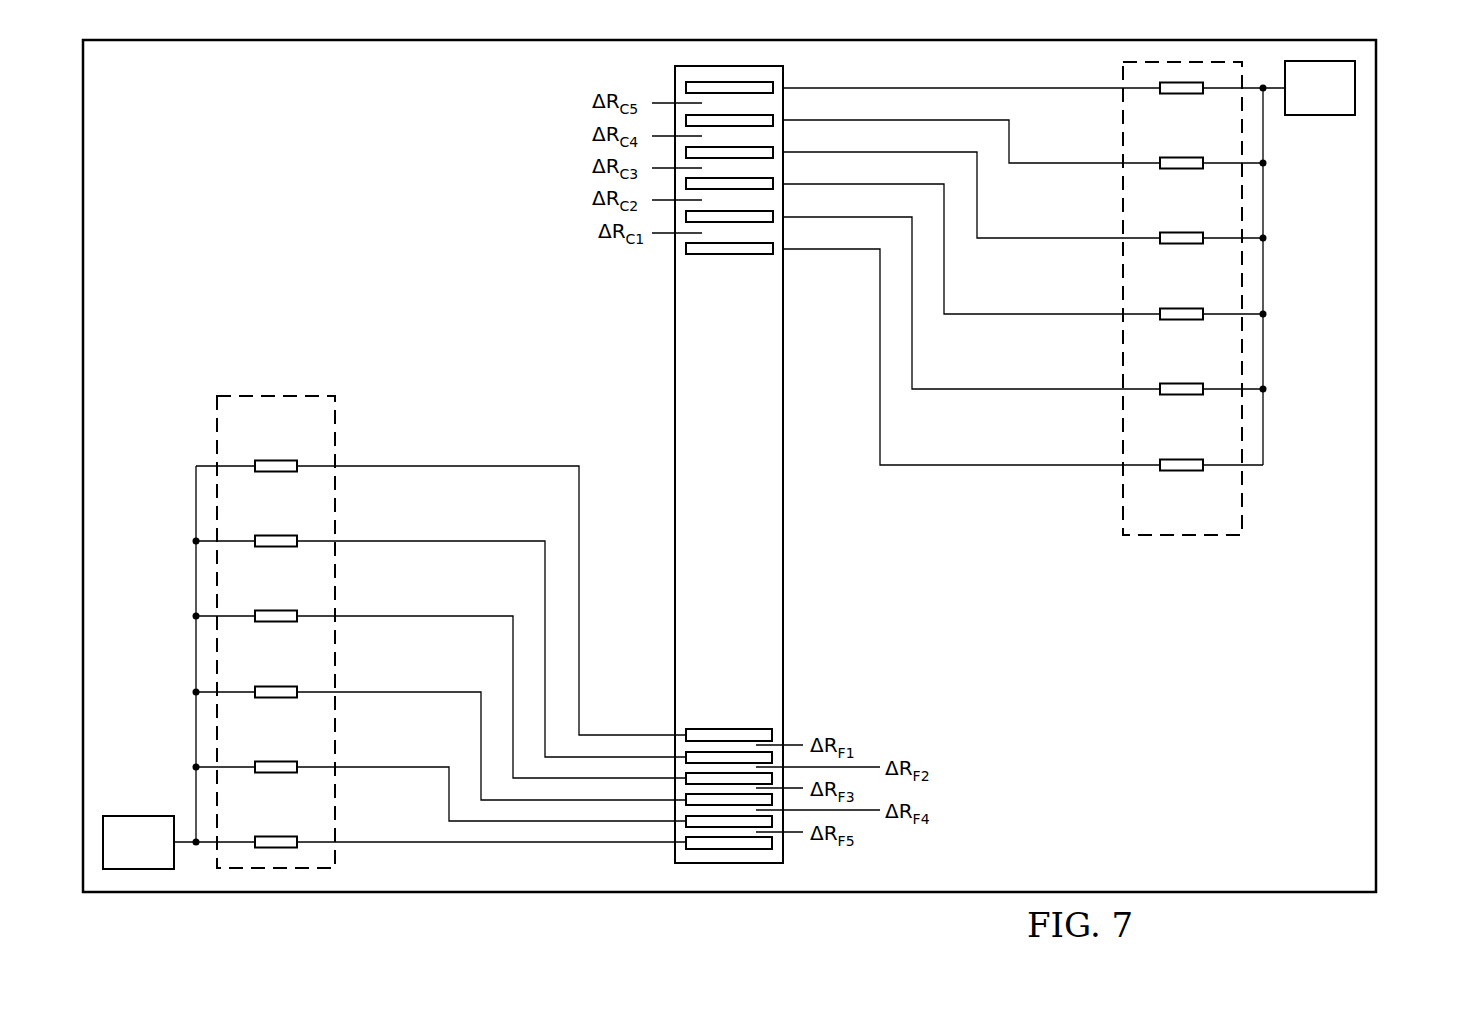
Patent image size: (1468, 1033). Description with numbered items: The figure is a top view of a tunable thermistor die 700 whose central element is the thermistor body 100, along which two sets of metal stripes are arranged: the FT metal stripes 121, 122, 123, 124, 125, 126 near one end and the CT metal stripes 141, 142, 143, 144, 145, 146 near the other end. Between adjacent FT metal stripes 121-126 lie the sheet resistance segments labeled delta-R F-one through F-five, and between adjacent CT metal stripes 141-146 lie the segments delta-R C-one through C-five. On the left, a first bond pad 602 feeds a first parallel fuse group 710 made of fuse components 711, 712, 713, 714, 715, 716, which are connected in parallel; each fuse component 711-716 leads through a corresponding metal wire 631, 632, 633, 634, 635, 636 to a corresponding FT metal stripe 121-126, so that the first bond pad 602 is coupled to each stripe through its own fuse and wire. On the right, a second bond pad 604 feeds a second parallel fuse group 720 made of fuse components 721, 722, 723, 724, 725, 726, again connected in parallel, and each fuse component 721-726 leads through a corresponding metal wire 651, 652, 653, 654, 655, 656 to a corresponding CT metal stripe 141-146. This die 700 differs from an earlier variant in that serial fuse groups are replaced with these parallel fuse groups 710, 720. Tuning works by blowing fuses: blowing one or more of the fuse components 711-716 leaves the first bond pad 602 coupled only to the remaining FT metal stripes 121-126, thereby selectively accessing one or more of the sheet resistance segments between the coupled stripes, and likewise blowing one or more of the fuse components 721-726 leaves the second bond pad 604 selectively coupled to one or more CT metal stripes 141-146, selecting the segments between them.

The sensor device 100 is at (709, 481).
The FT metal stripe 121 is at (723, 729).
The FT metal stripe 122 is at (717, 752).
The FT metal stripe 123 is at (742, 773).
The FT metal stripe 124 is at (738, 806).
The FT metal stripe 125 is at (693, 828).
The FT metal stripe 126 is at (718, 849).
The CT metal stripe 141 is at (757, 244).
The CT metal stripe 142 is at (757, 212).
The CT metal stripe 143 is at (757, 179).
The CT metal stripe 144 is at (757, 148).
The CT metal stripe 145 is at (757, 116).
The CT metal stripe 146 is at (757, 83).
The first bond pad 602 is at (118, 856).
The second bond pad 604 is at (1300, 101).
The metal wire 631 is at (385, 464).
The metal wire 632 is at (385, 539).
The metal wire 633 is at (385, 614).
The metal wire 634 is at (385, 690).
The metal wire 635 is at (385, 765).
The metal wire 636 is at (385, 840).
The metal wire 651 is at (1063, 466).
The metal wire 652 is at (1063, 390).
The metal wire 653 is at (1063, 315).
The metal wire 654 is at (1063, 239).
The metal wire 655 is at (1063, 164).
The metal wire 656 is at (1063, 89).
The tunable thermistor die 700 is at (1385, 340).
The first parallel fuse group 710 is at (244, 386).
The fuse component 711 is at (275, 459).
The fuse component 712 is at (275, 534).
The fuse component 713 is at (275, 609).
The fuse component 714 is at (275, 685).
The fuse component 715 is at (275, 760).
The fuse component 716 is at (275, 835).
The second parallel fuse group 720 is at (1214, 544).
The fuse component 721 is at (1183, 471).
The fuse component 722 is at (1183, 395).
The fuse component 723 is at (1183, 320).
The fuse component 724 is at (1183, 244).
The fuse component 725 is at (1183, 169).
The fuse component 726 is at (1183, 94).